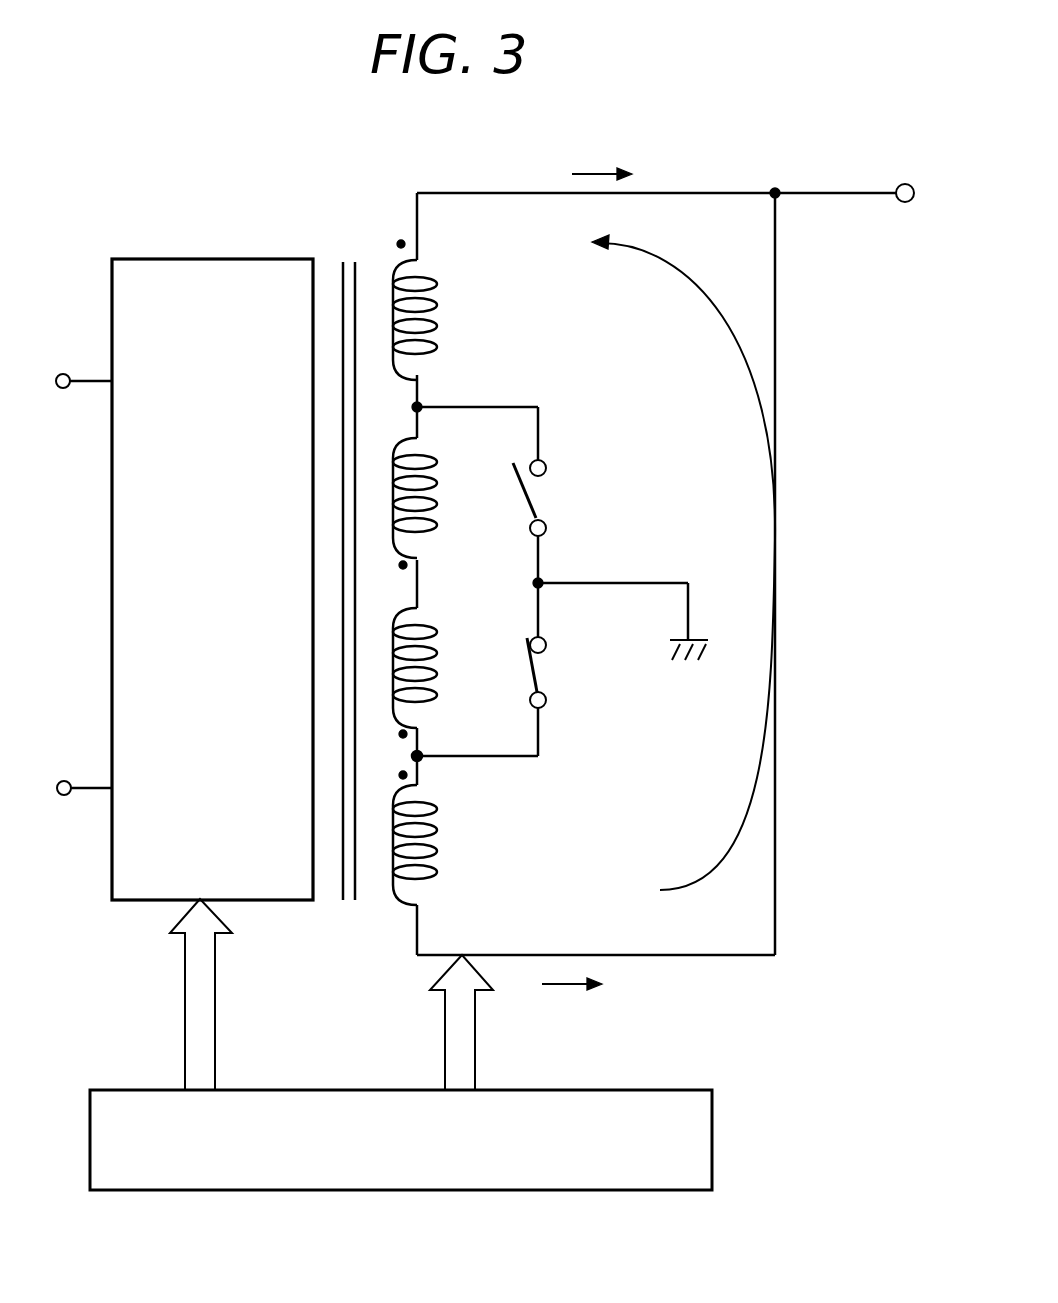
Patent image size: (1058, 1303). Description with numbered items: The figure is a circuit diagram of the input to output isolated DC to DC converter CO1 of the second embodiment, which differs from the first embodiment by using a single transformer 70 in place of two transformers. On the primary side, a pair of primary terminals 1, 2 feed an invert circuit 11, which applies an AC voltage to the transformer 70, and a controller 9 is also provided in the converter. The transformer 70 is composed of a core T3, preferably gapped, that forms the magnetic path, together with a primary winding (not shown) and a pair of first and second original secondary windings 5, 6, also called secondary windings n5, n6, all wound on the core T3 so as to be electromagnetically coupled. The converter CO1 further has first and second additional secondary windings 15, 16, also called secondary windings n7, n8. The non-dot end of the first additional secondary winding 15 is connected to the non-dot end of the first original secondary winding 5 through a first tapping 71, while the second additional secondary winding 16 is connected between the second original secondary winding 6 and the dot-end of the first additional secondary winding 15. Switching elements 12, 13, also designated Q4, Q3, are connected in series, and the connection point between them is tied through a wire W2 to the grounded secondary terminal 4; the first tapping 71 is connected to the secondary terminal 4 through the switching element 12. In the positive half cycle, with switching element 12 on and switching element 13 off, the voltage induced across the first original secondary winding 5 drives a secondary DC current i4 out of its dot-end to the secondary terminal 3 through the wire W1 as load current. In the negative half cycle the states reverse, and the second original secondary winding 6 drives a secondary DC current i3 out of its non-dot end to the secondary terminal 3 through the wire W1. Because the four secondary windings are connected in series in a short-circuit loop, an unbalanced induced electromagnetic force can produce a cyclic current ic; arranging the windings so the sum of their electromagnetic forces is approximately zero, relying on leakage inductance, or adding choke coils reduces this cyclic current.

The primary terminal 1 is at (93, 377).
The primary terminal 2 is at (95, 792).
The secondary terminal 3 is at (845, 193).
The secondary terminal 4 is at (672, 583).
The first original secondary winding 5 is at (449, 310).
The second original secondary winding 6 is at (458, 838).
The controller 9 is at (712, 1118).
The invert circuit 11 is at (220, 259).
The switching element 12 is at (573, 521).
The switching element 13 is at (580, 659).
The first additional secondary winding 15 is at (448, 497).
The second additional secondary winding 16 is at (454, 673).
The transformer 70 is at (411, 587).
The first tapping 71 is at (425, 407).
The core T3 is at (346, 240).
The wire W1 is at (710, 193).
The wire W2 is at (630, 583).
The switching element Q3 is at (548, 660).
The switching element Q4 is at (540, 505).
The secondary winding n5 is at (461, 302).
The secondary winding n6 is at (460, 857).
The secondary winding n7 is at (459, 512).
The secondary winding n8 is at (460, 682).
The secondary DC current i3 is at (572, 997).
The secondary DC current i4 is at (602, 162).
The circulating current ic is at (679, 562).
The input to output isolated DC to DC converter CO1 is at (805, 1165).